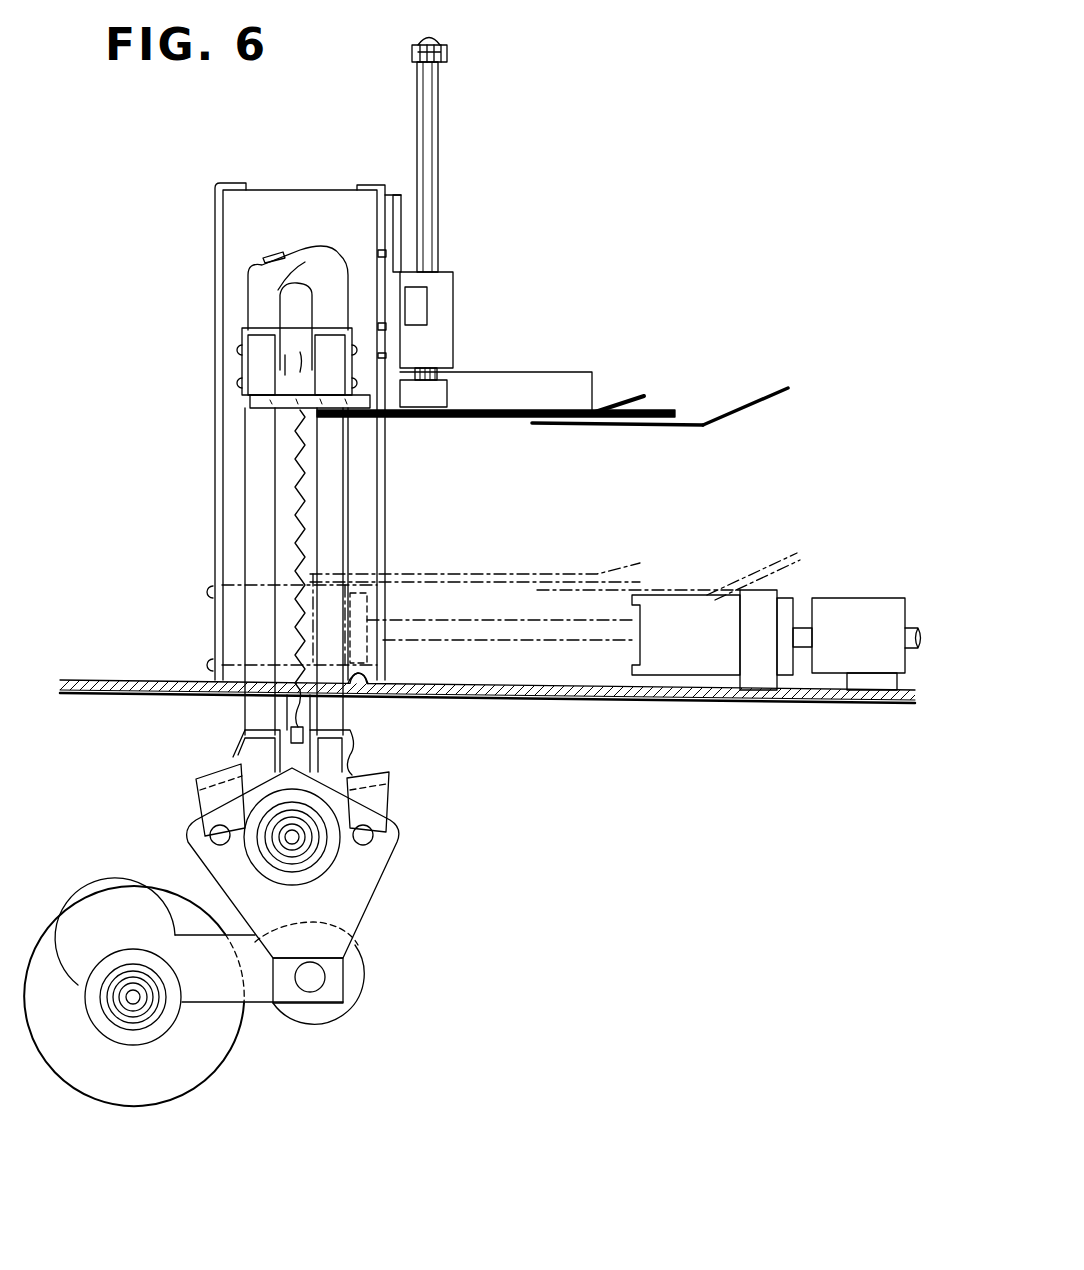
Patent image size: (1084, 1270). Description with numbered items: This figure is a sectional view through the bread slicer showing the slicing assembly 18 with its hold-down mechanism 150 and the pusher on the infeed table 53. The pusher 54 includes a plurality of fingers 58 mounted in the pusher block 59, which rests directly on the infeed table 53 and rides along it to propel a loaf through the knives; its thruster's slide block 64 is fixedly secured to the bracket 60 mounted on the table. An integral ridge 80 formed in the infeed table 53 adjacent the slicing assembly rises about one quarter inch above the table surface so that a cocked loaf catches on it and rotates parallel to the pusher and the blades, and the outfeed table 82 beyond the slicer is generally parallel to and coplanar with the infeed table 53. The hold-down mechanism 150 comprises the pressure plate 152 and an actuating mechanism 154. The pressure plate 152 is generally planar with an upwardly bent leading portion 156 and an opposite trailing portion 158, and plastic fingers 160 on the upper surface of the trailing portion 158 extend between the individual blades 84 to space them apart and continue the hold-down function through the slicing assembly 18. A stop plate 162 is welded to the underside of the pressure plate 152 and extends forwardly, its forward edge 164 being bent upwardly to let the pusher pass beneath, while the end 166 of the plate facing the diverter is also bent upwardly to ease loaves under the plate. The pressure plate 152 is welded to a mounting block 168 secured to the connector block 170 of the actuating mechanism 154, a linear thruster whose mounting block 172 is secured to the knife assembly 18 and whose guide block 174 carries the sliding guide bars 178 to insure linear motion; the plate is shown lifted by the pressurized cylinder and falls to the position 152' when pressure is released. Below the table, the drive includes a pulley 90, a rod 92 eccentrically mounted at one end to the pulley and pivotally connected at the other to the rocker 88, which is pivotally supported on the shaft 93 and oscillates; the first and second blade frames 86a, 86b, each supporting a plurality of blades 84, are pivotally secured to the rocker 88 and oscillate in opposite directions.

The slicing assembly 18 is at (250, 537).
The infeed table 53 is at (548, 702).
The pusher 54 is at (788, 584).
The fingers 58 is at (675, 610).
The pusher block 59 is at (755, 675).
The bracket 60 is at (873, 685).
The slide block 64 is at (870, 613).
The ridge 80 is at (362, 676).
The outfeed table 82 is at (106, 696).
The blades 84 is at (295, 452).
The first blade frame 86a is at (197, 792).
The second blade frame 86b is at (377, 800).
The rocker 88 is at (337, 908).
The pulley 90 is at (133, 1080).
The rod 92 is at (258, 985).
The shaft 93 is at (300, 838).
The hold-down mechanism 150 is at (512, 345).
The pressure plate 152 is at (496, 453).
The lowered position of pressure plate 152' is at (555, 588).
The actuating mechanism 154 is at (458, 281).
The leading portion 156 is at (626, 398).
The trailing portion 158 is at (360, 414).
The plastic fingers 160 is at (250, 400).
The stop plate 162 is at (688, 428).
The forward edge 164 is at (765, 403).
The end 166 is at (542, 388).
The mounting block 168 is at (437, 408).
The connector block 170 is at (447, 388).
The mounting block 172 is at (397, 230).
The guide block 174 is at (433, 330).
The guide bars 178 is at (422, 195).